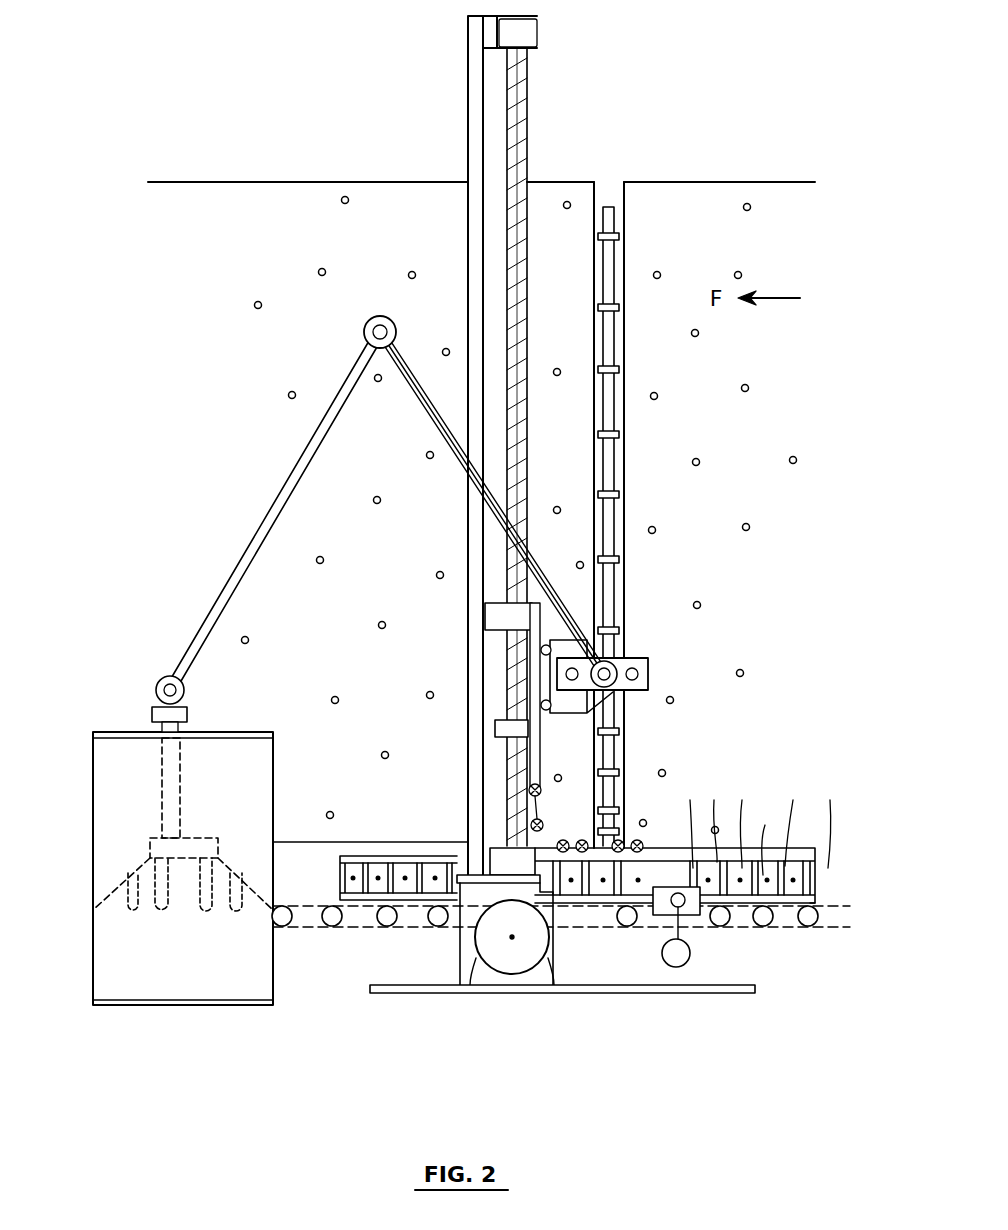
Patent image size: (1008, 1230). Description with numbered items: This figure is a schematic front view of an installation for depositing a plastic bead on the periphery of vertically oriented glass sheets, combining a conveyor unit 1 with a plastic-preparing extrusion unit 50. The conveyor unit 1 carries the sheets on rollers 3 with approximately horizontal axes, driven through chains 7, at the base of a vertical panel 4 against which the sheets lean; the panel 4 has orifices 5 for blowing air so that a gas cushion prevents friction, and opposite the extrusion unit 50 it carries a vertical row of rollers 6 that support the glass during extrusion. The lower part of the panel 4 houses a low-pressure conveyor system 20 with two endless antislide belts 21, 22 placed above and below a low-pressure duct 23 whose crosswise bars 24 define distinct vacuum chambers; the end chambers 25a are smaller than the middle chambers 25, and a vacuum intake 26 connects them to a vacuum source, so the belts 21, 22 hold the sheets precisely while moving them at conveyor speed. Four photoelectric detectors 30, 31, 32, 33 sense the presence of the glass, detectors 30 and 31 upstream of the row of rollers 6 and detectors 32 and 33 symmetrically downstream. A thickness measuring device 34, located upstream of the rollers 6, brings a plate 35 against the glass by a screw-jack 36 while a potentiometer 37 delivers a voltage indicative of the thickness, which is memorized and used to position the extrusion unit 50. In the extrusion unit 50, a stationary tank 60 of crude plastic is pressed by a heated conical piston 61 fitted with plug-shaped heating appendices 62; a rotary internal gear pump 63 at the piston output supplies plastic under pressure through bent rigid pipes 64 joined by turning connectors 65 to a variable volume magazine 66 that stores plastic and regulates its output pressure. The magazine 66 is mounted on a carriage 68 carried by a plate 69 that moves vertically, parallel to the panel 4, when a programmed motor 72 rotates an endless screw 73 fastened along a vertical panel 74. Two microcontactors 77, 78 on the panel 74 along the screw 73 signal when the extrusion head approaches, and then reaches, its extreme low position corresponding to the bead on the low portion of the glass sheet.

The conveyor unit 1 is at (805, 668).
The rollers 3 is at (818, 925).
The panel 4 is at (777, 215).
The orifices 5 is at (658, 272).
The rollers 6 is at (618, 237).
The chains 7 is at (820, 904).
The low-pressure conveyor system 20 is at (838, 766).
The endless belt 21 is at (717, 816).
The endless belt 22 is at (687, 819).
The low-pressure duct 23 is at (827, 819).
The crosswise bars 24 is at (797, 818).
The vacuum chambers 25 is at (767, 835).
The vacuum chambers 25a is at (357, 878).
The vacuum intake 26 is at (747, 819).
The detector 30 is at (637, 853).
The detector 31 is at (617, 853).
The detector 32 is at (582, 853).
The detector 33 is at (563, 853).
The thickness measuring device 34 is at (715, 1006).
The plate 35 is at (684, 897).
The screw-jack 36 is at (688, 906).
The potentiometer 37 is at (676, 968).
The extrusion unit 50 is at (212, 442).
The tank 60 is at (118, 1007).
The heated conical piston 61 is at (118, 898).
The heating appendices 62 is at (210, 912).
The rotary internal gear pump 63 is at (205, 843).
The bent rigid pipes 64 is at (430, 405).
The turning connectors 65 is at (380, 316).
The variable volume magazine 66 is at (630, 656).
The carriage 68 is at (572, 708).
The plate 69 is at (528, 667).
The motor 72 is at (505, 956).
The endless screw 73 is at (524, 136).
The vertical panel 74 is at (476, 152).
The microcontactor 77 is at (528, 790).
The microcontactor 78 is at (530, 826).